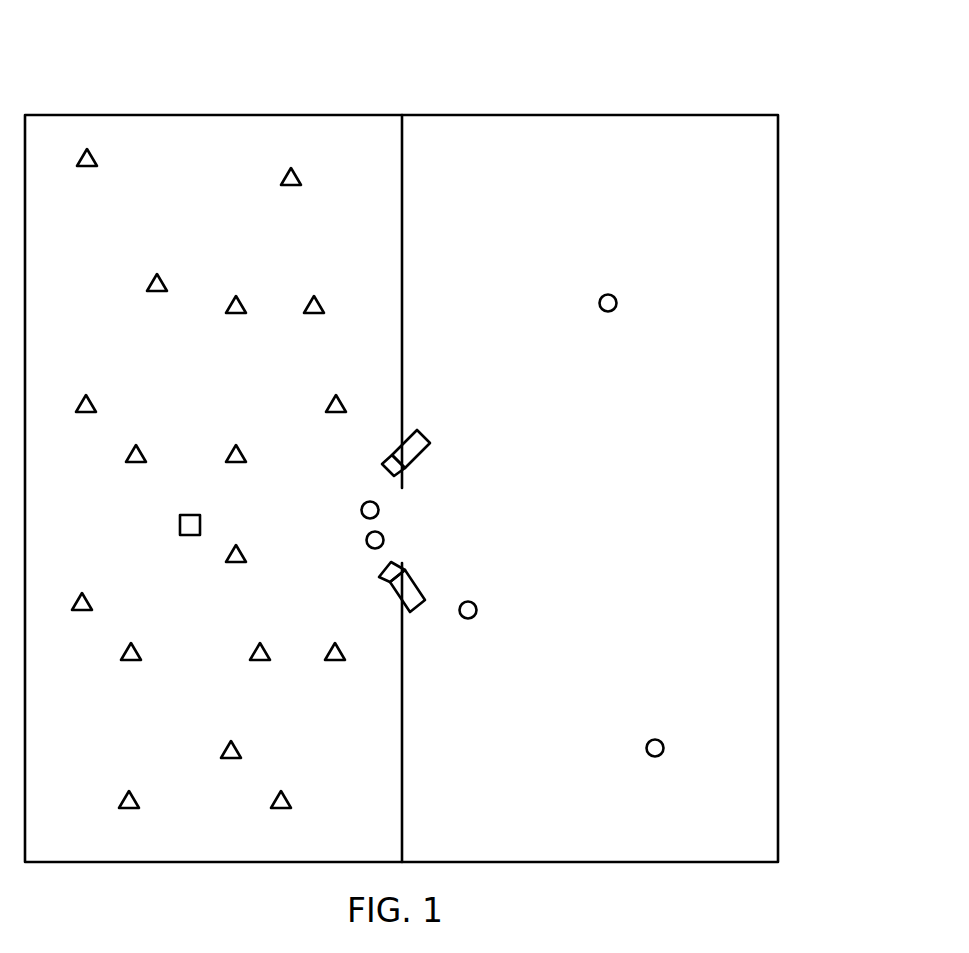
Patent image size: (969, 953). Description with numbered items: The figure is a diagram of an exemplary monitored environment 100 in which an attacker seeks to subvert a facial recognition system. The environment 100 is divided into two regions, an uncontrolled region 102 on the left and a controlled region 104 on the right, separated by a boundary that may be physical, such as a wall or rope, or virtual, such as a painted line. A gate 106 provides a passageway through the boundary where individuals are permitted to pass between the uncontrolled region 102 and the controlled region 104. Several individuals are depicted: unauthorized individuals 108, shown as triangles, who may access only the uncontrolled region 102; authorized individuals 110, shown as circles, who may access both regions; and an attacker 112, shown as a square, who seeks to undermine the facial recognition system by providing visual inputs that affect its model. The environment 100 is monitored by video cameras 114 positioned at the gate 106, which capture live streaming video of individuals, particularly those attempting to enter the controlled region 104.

The monitored environment 100 is at (778, 150).
The uncontrolled region 102 is at (210, 114).
The controlled region 104 is at (585, 114).
The gate 106 is at (401, 497).
The unauthorized individuals 108 is at (280, 184).
The authorized individuals 110 is at (598, 306).
The attacker 112 is at (178, 528).
The video cameras 114 is at (428, 443).